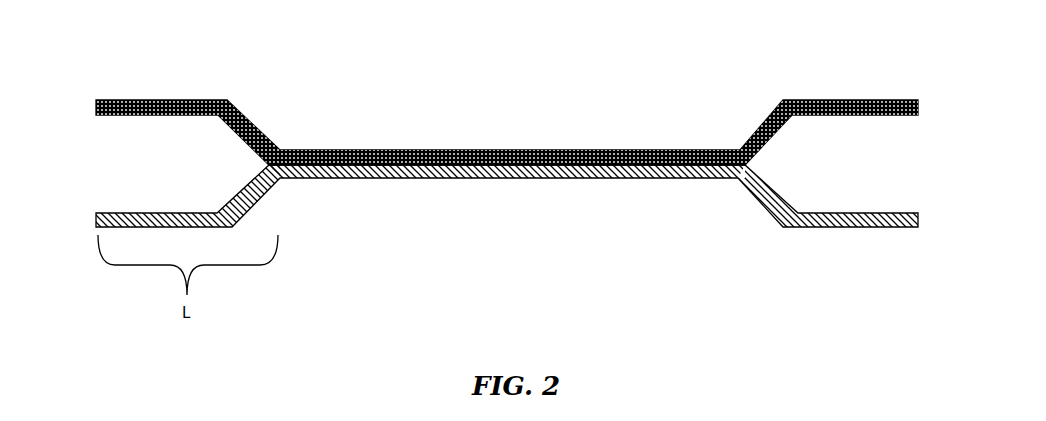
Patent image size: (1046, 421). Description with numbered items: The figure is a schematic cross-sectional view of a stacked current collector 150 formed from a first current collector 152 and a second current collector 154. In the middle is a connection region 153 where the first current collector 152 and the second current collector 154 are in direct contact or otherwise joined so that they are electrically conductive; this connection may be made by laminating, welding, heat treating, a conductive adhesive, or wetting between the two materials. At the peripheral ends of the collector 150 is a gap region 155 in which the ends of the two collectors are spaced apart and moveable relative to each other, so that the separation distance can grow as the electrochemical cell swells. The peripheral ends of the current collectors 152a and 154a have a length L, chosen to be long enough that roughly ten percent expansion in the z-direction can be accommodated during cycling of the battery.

The stacked current collector 150 is at (345, 76).
The first current collector 152 is at (824, 101).
The peripheral end of the first current collector 152a is at (170, 100).
The connection region 153 is at (738, 200).
The second current collector 154 is at (852, 217).
The peripheral end of the second current collector 154a is at (188, 215).
The gap region 155 is at (90, 92).